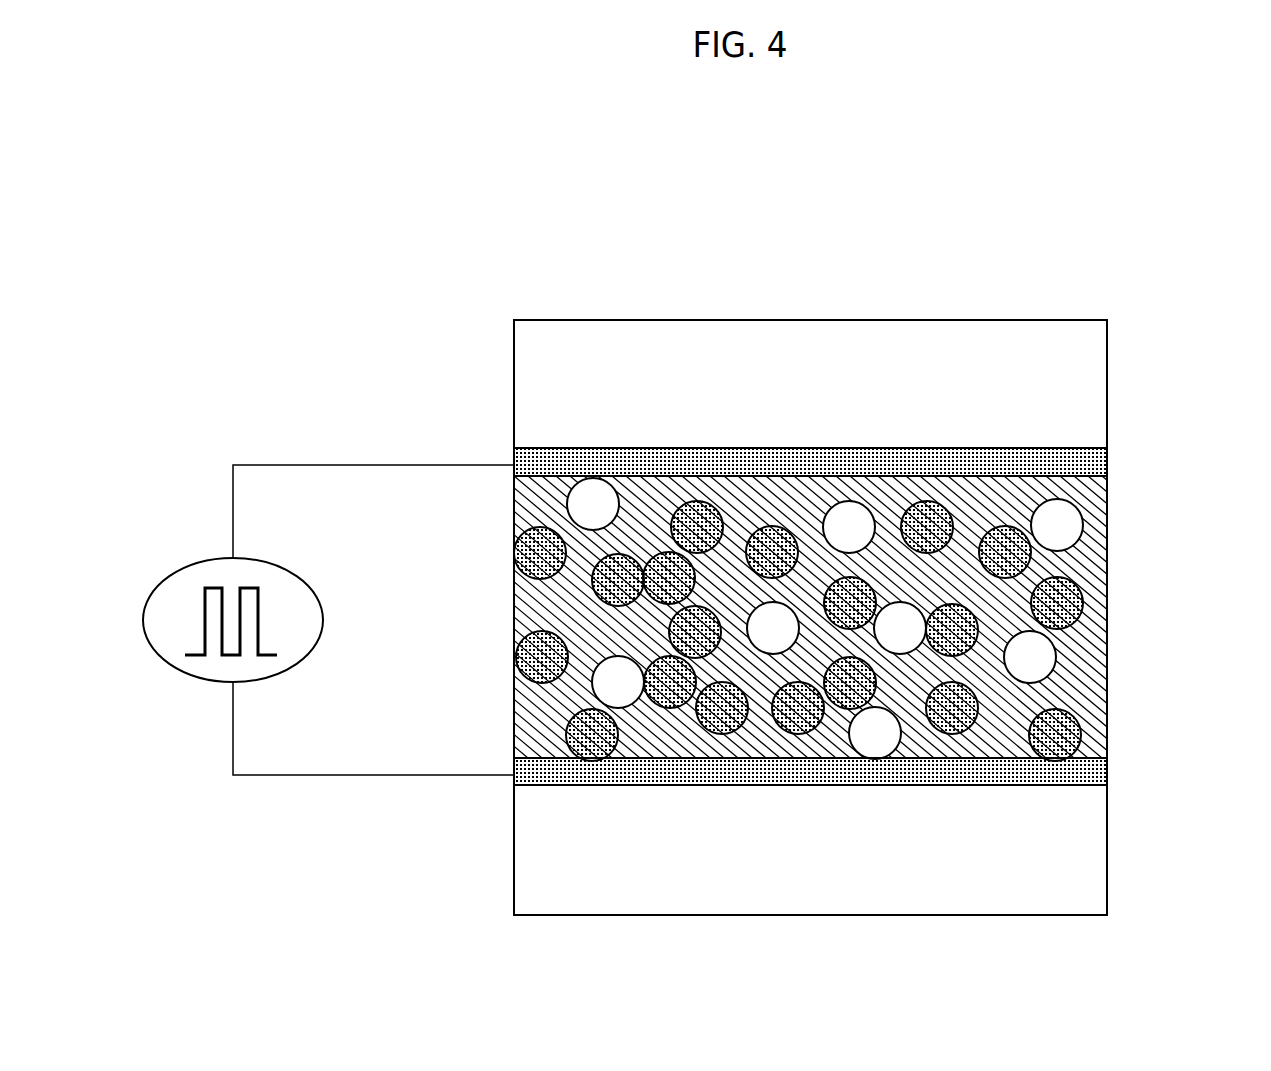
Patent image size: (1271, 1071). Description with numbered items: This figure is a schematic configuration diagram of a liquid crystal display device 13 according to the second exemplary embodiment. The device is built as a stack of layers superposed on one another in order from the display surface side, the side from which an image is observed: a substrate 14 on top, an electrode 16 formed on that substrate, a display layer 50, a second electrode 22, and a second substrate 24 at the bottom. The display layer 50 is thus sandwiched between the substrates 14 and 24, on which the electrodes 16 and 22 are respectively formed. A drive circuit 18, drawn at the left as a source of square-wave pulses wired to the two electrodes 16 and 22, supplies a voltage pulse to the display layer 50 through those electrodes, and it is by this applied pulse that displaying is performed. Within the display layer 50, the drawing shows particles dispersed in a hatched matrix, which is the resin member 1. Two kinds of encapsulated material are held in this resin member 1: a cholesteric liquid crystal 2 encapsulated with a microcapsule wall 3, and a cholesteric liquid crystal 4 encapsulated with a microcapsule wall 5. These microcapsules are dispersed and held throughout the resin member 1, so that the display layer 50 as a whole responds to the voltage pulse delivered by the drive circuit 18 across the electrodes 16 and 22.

The resin member 1 is at (1090, 548).
The cholesteric liquid crystal 2 is at (1063, 605).
The microcapsule wall 3 is at (1078, 615).
The cholesteric liquid crystal 4 is at (1173, 523).
The microcapsule wall 5 is at (1088, 672).
The liquid crystal display device 13 is at (1020, 246).
The substrate 14 is at (1092, 382).
The electrode 16 is at (1092, 460).
The drive circuit 18 is at (197, 683).
The electrode 22 is at (1093, 770).
The substrate 24 is at (1093, 848).
The display layer 50 is at (717, 618).